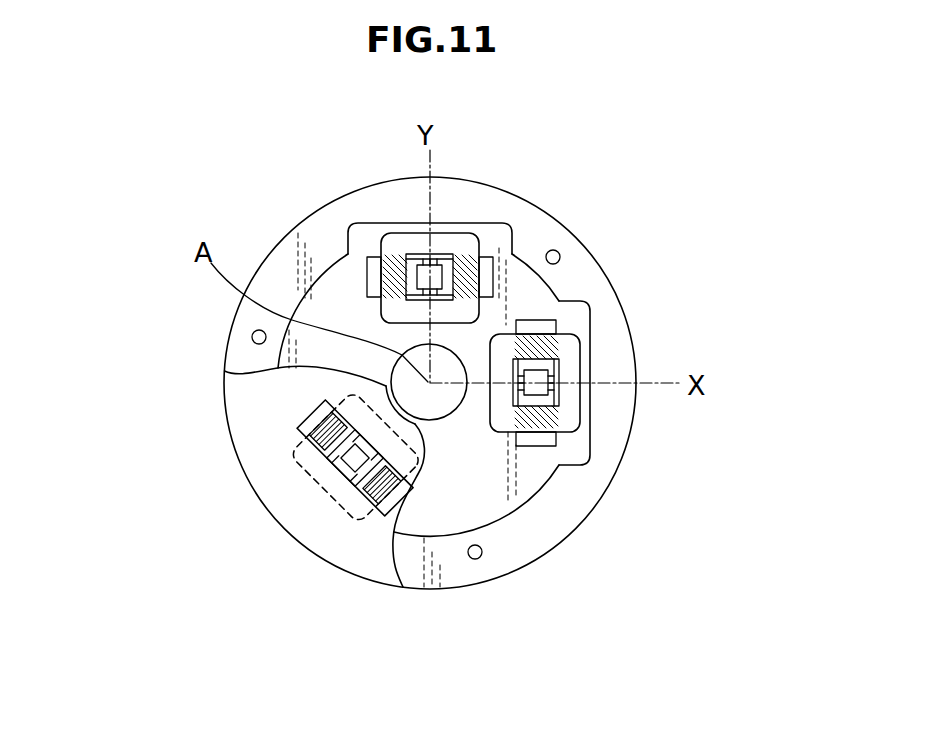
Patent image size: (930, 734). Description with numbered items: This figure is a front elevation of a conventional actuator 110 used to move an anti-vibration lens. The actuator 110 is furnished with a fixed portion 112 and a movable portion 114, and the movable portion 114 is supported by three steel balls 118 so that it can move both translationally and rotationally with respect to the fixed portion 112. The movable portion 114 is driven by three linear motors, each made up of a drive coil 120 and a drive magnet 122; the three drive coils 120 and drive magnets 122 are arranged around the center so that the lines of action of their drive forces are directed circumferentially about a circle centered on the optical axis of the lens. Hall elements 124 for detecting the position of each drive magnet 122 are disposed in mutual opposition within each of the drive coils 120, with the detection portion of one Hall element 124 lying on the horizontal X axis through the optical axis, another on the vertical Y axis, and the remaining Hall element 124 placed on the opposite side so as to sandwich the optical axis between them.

The actuator 110 is at (211, 190).
The fixed portion 112 is at (265, 404).
The movable portion 114 is at (537, 523).
The steel balls 118 is at (258, 337).
The drive coils 120 is at (462, 243).
The drive magnets 122 is at (377, 269).
The Hall elements 124 is at (441, 267).